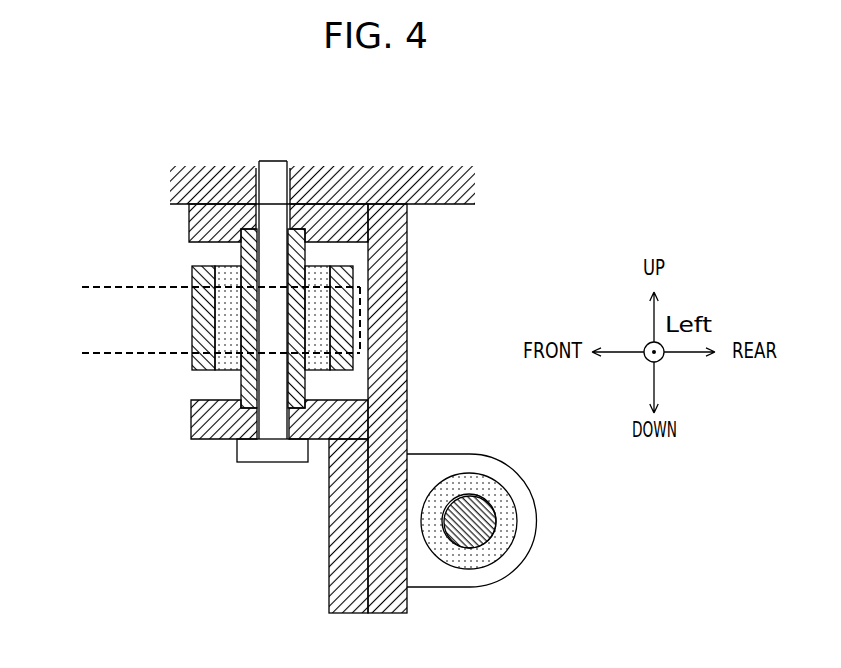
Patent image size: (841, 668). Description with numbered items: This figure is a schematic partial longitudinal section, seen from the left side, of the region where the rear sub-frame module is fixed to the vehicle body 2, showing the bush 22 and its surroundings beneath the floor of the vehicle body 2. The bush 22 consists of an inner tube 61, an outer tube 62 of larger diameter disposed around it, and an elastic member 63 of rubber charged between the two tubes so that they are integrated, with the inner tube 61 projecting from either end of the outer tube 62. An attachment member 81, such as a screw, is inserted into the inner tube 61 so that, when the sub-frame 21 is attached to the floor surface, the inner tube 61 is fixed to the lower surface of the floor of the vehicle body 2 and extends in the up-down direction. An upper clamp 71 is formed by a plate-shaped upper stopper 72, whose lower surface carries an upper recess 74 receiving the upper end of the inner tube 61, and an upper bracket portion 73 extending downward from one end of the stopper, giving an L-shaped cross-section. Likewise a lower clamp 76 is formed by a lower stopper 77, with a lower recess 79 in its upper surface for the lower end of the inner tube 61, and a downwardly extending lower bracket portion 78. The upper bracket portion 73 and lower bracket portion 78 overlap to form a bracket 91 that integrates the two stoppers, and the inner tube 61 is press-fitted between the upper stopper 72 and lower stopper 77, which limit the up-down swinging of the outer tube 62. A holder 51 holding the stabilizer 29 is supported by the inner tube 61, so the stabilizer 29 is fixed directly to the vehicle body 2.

The vehicle body 2 is at (468, 178).
The sub-frame 21 is at (103, 355).
The bush 22 is at (193, 318).
The inner tube 61 is at (240, 248).
The outer tube 62 is at (191, 298).
The elastic member 63 is at (220, 273).
The upper clamp 71 is at (355, 408).
The upper stopper 72 is at (308, 232).
The upper bracket portion 73 is at (407, 313).
The upper recess 74 is at (317, 246).
The lower clamp 76 is at (224, 492).
The lower stopper 77 is at (207, 440).
The lower bracket portion 78 is at (343, 519).
The lower recess 79 is at (224, 393).
The attachment member 81 is at (260, 452).
The bracket 91 is at (308, 582).
The holder 51 is at (532, 505).
The stabilizer 29 is at (490, 535).